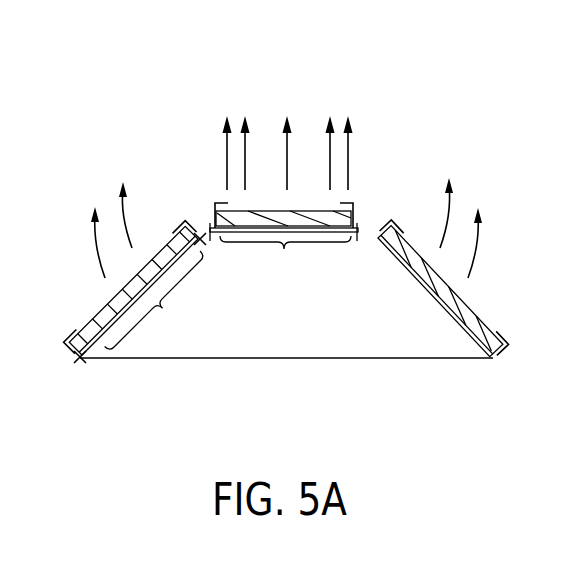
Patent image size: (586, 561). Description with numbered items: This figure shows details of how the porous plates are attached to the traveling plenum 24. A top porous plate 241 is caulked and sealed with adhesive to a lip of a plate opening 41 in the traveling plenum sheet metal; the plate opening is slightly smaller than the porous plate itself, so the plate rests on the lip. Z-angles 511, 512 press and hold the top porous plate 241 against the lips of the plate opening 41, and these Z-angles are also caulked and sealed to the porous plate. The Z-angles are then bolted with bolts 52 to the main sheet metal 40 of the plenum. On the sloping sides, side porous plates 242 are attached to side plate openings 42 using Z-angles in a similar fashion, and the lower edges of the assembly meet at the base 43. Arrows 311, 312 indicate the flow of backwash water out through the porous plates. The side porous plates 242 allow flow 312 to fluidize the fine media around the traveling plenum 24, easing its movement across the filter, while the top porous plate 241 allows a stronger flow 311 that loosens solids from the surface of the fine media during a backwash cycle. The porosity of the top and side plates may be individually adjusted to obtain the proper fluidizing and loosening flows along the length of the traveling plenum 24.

The traveling plenum 24 is at (347, 320).
The main sheet metal 40 is at (455, 364).
The plate opening 41 is at (284, 252).
The side plate opening 42 is at (141, 298).
The base plate 43 is at (251, 360).
The bolt 52 is at (197, 234).
The top porous plate 241 is at (303, 210).
The side porous plate 242 is at (477, 310).
The flow 311 is at (288, 138).
The flow 312 is at (457, 213).
The Z-angle 511 is at (215, 203).
The Z-angle 512 is at (357, 205).